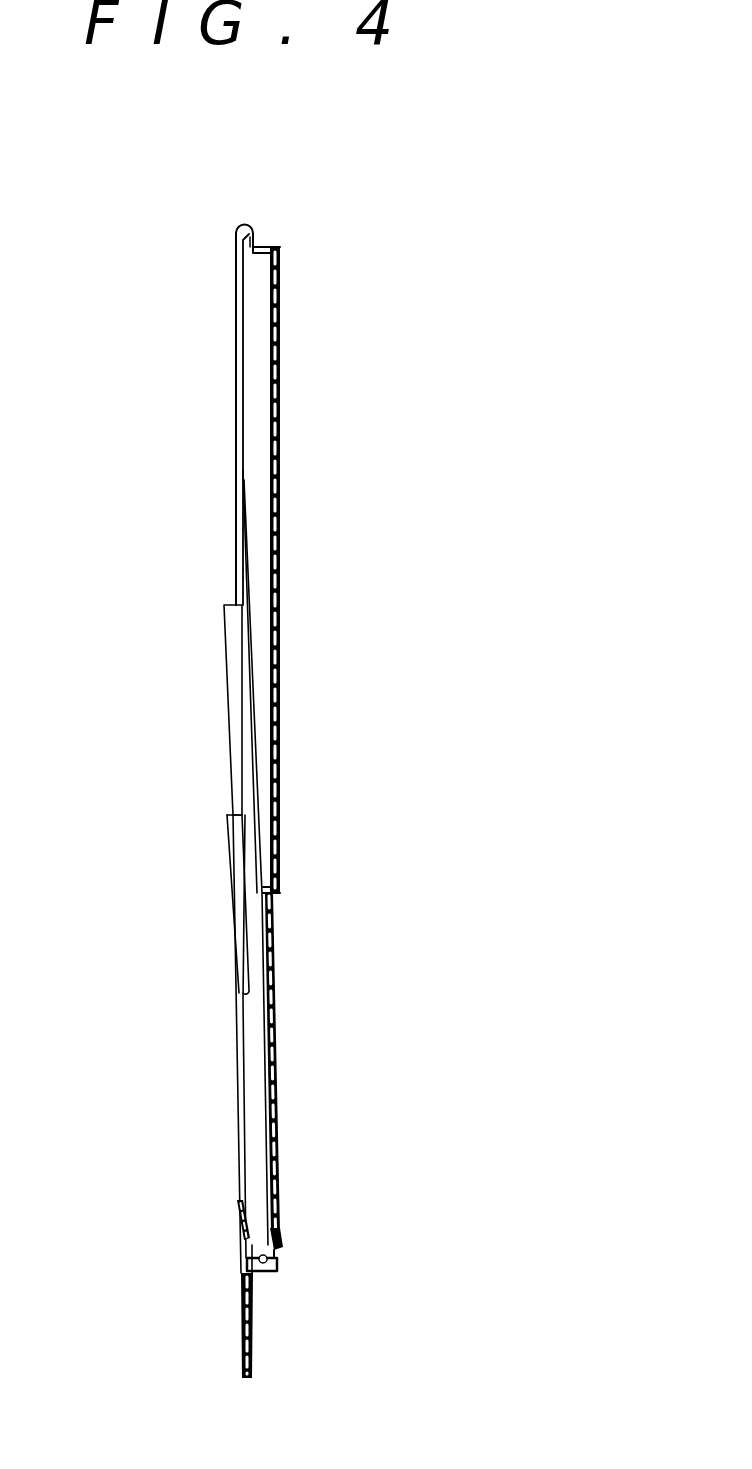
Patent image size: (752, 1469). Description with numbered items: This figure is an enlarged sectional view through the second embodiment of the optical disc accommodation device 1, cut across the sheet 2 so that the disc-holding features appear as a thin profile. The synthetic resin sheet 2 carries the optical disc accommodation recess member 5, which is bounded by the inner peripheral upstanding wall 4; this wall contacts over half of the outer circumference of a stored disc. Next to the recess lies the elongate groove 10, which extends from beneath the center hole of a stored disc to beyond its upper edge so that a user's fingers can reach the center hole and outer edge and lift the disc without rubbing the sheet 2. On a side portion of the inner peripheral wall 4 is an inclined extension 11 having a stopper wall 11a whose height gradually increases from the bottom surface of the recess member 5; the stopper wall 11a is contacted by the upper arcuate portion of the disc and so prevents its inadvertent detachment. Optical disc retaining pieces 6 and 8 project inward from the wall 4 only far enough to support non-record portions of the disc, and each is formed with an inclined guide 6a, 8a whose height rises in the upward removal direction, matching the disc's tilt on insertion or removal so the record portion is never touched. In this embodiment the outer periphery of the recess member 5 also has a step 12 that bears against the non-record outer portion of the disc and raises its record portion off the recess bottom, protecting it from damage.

The optical disc accommodation device 1 is at (300, 214).
The sheet 2 is at (237, 285).
The inner peripheral upstanding wall 4 is at (270, 1262).
The optical disc accommodation recess member 5 is at (266, 1072).
The optical disc retaining piece 6 is at (245, 937).
The inclined guide 6a is at (230, 822).
The optical disc retaining piece 8 is at (248, 1250).
The inclined guide 8a is at (237, 1207).
The elongate groove 10 is at (273, 389).
The inclined extension 11 is at (198, 628).
The stopper wall 11a is at (235, 687).
The step 12 is at (282, 1223).